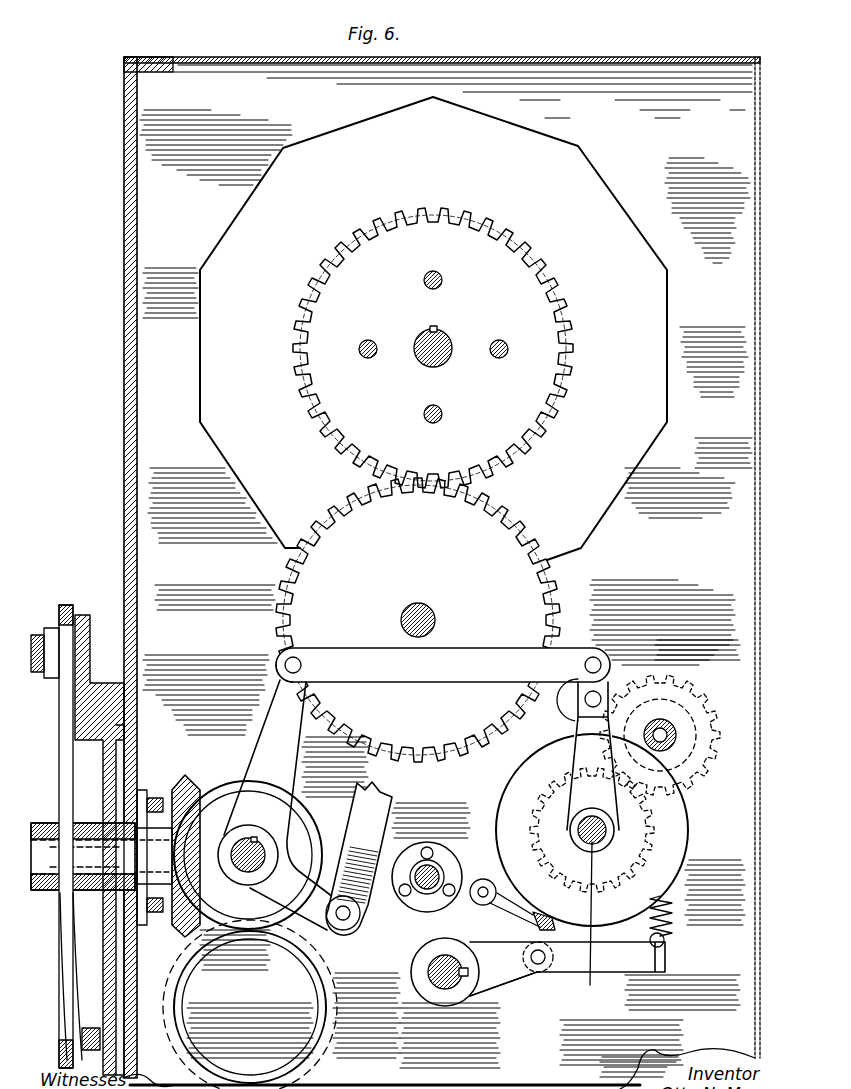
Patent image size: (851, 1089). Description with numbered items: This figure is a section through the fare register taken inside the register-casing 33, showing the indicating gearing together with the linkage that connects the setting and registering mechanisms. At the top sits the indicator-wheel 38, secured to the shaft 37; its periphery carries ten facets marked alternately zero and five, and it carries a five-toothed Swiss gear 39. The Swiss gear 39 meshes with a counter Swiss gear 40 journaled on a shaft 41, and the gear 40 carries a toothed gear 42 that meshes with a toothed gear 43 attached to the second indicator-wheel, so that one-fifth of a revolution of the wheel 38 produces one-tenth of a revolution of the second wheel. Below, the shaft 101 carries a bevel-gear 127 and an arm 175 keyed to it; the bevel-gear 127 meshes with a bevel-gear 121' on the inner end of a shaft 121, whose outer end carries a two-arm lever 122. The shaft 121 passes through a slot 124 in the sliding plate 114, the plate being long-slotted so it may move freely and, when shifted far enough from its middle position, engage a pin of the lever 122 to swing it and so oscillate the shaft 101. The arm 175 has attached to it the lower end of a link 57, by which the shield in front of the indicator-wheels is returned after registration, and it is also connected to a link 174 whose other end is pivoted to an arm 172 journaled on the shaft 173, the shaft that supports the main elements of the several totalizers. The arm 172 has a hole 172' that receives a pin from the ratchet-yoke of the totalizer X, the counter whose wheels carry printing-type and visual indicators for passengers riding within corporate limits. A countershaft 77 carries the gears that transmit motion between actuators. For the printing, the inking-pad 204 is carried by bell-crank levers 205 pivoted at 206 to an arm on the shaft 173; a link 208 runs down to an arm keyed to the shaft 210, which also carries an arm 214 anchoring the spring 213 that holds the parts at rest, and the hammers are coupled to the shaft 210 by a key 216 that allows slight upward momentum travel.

The register-casing 33 is at (124, 222).
The indicator-wheel 38 is at (612, 500).
The toothed gear 43 is at (535, 300).
The five-toothed Swiss gear 39 is at (293, 337).
The shaft 37 is at (445, 340).
The counter Swiss gear 40 is at (560, 598).
The toothed gear 42 is at (300, 592).
The shaft 41 is at (426, 611).
The link 174 is at (443, 665).
The arm 175 is at (278, 797).
The bevel-gear 127 is at (285, 905).
The shaft 101 is at (248, 862).
The link 57 is at (359, 858).
The countershaft 77 is at (418, 892).
The totalizer X is at (682, 826).
The hole 172' is at (660, 723).
The arm 172 is at (588, 765).
The shaft 173 is at (592, 924).
The spring 213 is at (668, 921).
The link 208 is at (556, 937).
The key 216 is at (503, 1013).
The shaft 210 is at (446, 986).
The pivot 206 is at (478, 909).
The bell-crank lever 205 is at (510, 893).
The inking-pad 204 is at (538, 918).
The arm 214 is at (519, 957).
The bevel-gear 121' is at (198, 839).
The shaft 121 is at (97, 832).
The two-arm lever 122 is at (66, 605).
The slot 124 is at (105, 890).
The sliding plate 114 is at (105, 980).